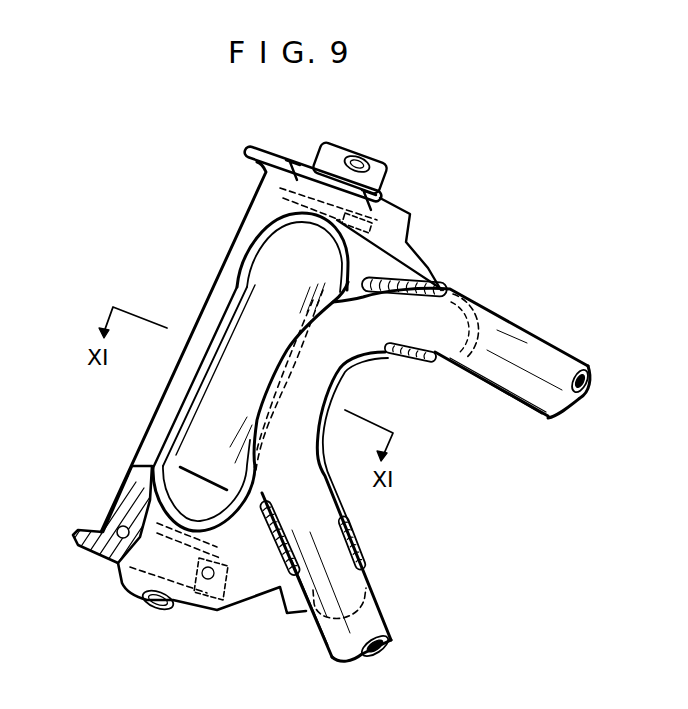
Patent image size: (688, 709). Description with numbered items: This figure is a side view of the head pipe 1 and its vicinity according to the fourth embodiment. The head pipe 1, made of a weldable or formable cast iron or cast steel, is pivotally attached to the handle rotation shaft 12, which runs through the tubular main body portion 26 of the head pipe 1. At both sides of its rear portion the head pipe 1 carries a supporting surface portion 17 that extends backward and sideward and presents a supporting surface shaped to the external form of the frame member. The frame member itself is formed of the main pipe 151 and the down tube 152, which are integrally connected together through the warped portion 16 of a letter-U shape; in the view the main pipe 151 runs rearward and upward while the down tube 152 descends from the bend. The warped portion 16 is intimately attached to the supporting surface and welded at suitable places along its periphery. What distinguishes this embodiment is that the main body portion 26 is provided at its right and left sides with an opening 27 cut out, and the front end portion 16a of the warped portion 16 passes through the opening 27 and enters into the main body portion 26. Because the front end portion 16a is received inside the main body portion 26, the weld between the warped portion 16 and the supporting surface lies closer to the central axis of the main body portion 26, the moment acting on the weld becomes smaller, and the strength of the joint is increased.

The head pipe 1 is at (198, 263).
The handle rotation shaft 12 is at (203, 422).
The warped portion 16 is at (327, 388).
The front end portion of the warped portion 16a is at (278, 357).
The supporting surface portion 17 is at (398, 279).
The main body portion 26 is at (217, 306).
The opening 27 is at (262, 235).
The main pipe 151 is at (528, 348).
The down tube 152 is at (379, 615).